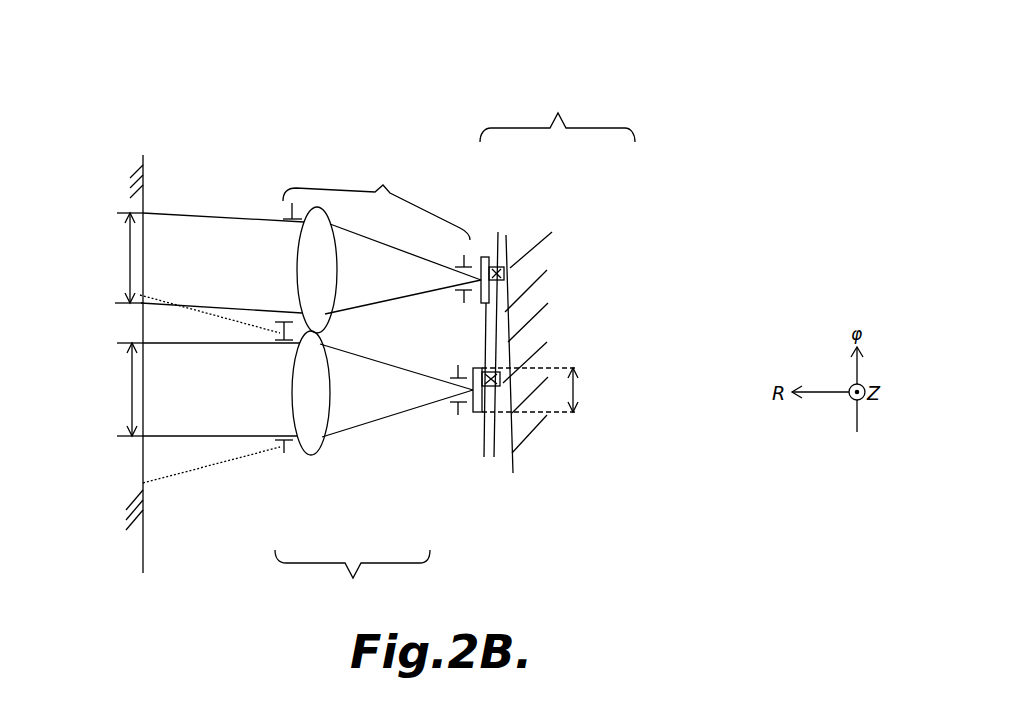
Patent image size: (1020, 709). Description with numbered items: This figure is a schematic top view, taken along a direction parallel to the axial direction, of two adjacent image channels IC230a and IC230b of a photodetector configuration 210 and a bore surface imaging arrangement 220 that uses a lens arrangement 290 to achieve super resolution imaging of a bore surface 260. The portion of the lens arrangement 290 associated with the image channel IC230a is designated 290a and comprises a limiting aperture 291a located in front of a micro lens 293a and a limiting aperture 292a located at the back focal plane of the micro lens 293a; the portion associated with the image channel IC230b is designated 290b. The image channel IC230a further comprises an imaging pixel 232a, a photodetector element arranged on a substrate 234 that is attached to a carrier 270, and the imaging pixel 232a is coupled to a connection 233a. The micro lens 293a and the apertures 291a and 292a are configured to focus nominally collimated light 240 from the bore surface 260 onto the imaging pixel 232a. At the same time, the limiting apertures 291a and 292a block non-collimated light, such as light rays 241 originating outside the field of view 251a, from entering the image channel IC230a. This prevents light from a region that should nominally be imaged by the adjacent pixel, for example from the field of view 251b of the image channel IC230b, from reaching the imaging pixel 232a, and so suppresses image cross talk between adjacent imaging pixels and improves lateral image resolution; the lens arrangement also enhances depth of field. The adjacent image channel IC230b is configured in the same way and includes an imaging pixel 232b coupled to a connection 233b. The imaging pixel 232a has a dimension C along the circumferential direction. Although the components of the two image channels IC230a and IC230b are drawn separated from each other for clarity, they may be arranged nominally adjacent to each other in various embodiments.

The photodetector configuration 210 is at (557, 112).
The bore surface imaging arrangement 220 is at (345, 150).
The lens arrangement 290 is at (333, 360).
The bore surface 260 is at (130, 176).
The field of view 251b is at (128, 259).
The field of view 251a is at (130, 386).
The light rays 241 is at (205, 310).
The nominally collimated light 240 is at (263, 415).
The portion of lens arrangement 290b is at (376, 201).
The portion of lens arrangement 290a is at (352, 582).
The limiting aperture 291a is at (284, 453).
The limiting aperture 292a is at (455, 412).
The micro lens 293a is at (311, 457).
The imaging pixel 232b is at (485, 257).
The imaging pixel 232a is at (476, 413).
The connection 233b is at (500, 263).
The connection 233a is at (502, 372).
The substrate 234 is at (499, 240).
The carrier 270 is at (549, 287).
The dimension C is at (577, 391).
The image channel IC230b is at (577, 180).
The image channel IC230a is at (612, 538).